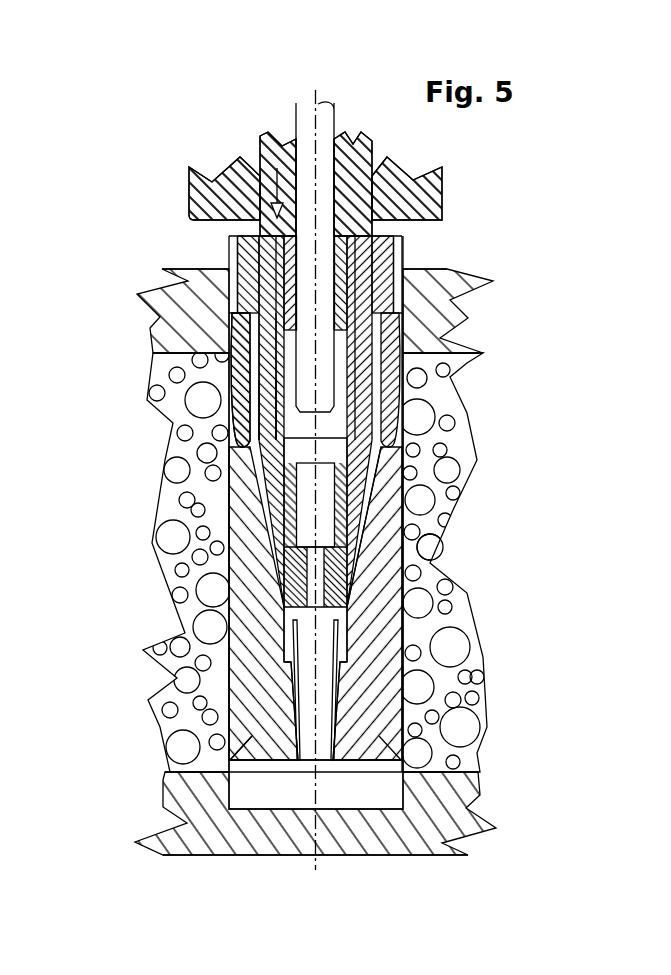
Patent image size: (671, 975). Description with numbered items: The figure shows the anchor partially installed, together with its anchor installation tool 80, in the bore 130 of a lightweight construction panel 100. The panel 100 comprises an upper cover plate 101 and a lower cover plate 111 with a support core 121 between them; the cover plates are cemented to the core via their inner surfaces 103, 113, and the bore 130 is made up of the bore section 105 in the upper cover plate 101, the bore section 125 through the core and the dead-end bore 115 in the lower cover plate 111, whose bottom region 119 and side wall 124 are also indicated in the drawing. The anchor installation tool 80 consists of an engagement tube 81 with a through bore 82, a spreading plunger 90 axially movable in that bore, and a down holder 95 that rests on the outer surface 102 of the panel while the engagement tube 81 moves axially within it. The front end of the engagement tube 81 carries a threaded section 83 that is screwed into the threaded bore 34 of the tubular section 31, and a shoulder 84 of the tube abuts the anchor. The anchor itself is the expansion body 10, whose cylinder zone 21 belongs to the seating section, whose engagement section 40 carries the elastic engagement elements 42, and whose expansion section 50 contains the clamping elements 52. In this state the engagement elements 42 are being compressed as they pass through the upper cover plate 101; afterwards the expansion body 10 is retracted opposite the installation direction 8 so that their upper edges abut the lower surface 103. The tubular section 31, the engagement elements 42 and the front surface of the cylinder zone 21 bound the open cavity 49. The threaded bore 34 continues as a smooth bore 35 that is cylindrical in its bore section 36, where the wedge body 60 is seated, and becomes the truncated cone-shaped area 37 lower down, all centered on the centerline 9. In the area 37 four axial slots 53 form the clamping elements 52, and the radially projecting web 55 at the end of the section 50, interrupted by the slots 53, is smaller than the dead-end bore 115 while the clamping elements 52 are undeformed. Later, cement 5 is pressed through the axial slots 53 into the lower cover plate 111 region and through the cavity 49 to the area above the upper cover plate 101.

The anchor installation tool 80 is at (448, 182).
The engagement tube 81 is at (297, 155).
The through bore 82 is at (270, 147).
The down holder 95 is at (199, 183).
The installation direction 8 is at (273, 206).
The shoulder 84 is at (258, 238).
The bore 130 is at (407, 264).
The spreading plunger 90 is at (307, 271).
The cylinder zone 21 is at (245, 290).
The threaded section 83 is at (288, 300).
The cement 5 is at (252, 347).
The open cavity 49 is at (398, 389).
The tubular section 31 is at (268, 377).
The threaded bore 34 is at (262, 395).
The engagement elements 42 is at (238, 413).
The cylindrical bore section 36 is at (283, 555).
The expansion section 50 is at (388, 692).
The expansion body 10 is at (395, 592).
The bore section 125 is at (400, 563).
The inner wall 124 is at (391, 617).
The bore section 105 is at (403, 344).
The wedge body 60 is at (335, 453).
The engagement section 40 is at (405, 466).
The centerline 9 is at (316, 637).
The smooth bore 35 is at (270, 628).
The axial slots 53 is at (295, 673).
The truncated cone-shaped area 37 is at (278, 697).
The clamping elements 52 is at (278, 718).
The web 55 is at (235, 762).
The upper cover plate 101 is at (432, 310).
The outer surface 102 is at (447, 270).
The inner surface 103 is at (458, 353).
The lightweight construction panel 100 is at (455, 528).
The support core 121 is at (440, 502).
The lower cover plate 111 is at (462, 810).
The dead-end bore 115 is at (402, 788).
The inner surface 113 is at (423, 772).
The base bottom 119 is at (442, 843).